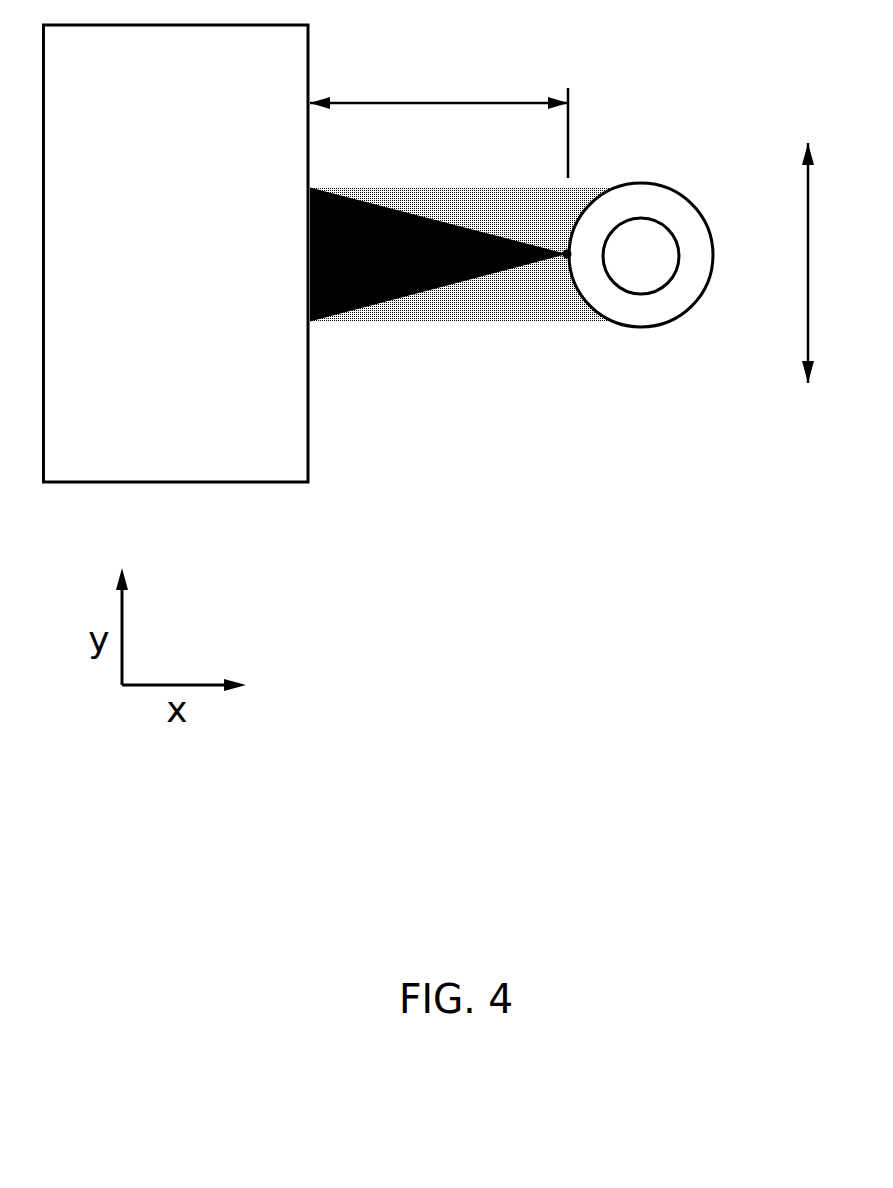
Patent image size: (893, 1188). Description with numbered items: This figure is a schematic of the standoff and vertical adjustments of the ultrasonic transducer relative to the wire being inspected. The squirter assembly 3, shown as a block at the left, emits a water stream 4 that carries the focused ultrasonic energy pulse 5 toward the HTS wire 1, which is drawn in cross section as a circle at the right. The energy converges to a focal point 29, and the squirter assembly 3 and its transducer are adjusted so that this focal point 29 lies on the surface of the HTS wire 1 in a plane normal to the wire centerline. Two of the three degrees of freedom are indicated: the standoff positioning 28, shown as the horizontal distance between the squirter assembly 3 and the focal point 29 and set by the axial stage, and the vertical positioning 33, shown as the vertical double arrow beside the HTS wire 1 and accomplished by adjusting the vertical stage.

The HTS wire 1 is at (641, 255).
The squirter assembly 3 is at (176, 253).
The water stream 4 is at (416, 322).
The focused ultrasonic energy pulse 5 is at (473, 187).
The standoff positioning 28 is at (439, 120).
The focal point 29 is at (568, 256).
The vertical positioning 33 is at (831, 263).